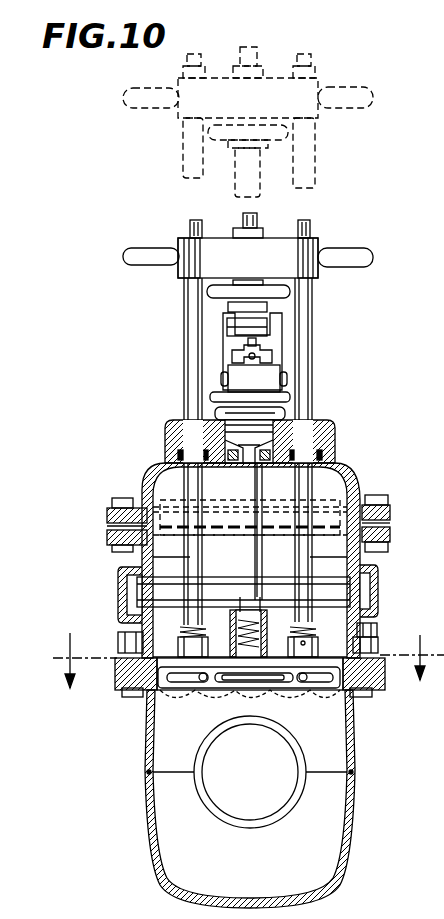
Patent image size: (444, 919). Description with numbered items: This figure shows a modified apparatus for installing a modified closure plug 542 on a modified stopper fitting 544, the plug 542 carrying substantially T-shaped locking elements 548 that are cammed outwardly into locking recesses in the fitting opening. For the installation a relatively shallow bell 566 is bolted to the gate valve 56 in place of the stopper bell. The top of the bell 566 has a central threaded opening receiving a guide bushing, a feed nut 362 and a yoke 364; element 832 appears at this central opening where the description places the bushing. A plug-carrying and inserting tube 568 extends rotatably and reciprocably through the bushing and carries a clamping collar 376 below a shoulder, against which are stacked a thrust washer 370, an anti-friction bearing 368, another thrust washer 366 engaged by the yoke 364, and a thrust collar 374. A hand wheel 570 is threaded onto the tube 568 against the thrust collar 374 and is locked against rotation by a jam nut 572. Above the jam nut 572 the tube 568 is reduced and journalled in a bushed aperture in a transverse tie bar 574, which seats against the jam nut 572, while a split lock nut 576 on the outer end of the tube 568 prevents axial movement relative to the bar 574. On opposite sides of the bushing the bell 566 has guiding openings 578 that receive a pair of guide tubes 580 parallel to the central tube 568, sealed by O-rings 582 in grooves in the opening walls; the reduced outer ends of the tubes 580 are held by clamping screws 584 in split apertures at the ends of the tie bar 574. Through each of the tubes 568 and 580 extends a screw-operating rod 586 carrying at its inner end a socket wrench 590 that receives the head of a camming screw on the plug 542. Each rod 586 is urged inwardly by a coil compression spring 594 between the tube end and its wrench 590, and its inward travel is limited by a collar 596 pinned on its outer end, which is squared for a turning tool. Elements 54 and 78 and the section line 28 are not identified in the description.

The transverse tie bar 574 is at (263, 269).
The clamping screws 584 is at (180, 244).
The collar 596 is at (188, 235).
The split lock nut 576 is at (258, 228).
The guide tubes 580 is at (185, 385).
The jam nut 572 is at (265, 283).
The hand wheel 570 is at (290, 296).
The thrust collar 374 is at (228, 307).
The thrust washer 366 is at (227, 326).
The anti-friction bearing 368 is at (224, 330).
The thrust washer 370 is at (232, 355).
The clamping collar 376 is at (268, 362).
The yoke 364 is at (283, 360).
The feed nut 362 is at (257, 380).
The packing ring 832 is at (285, 414).
The plug-carrying and inserting tube 568 is at (265, 348).
The guiding openings 578 is at (200, 440).
The O-rings 582 is at (178, 455).
The bell 566 is at (355, 480).
The coil compression spring 594 is at (140, 625).
The gate valve 56 is at (378, 575).
The nut 54 is at (372, 628).
The socket wrench 590 is at (120, 642).
The screw-operating rod 586 is at (185, 625).
The closure plug 542 is at (265, 692).
The locking elements 548 is at (180, 684).
The stopper fitting 544 is at (145, 843).
The port 78 is at (283, 810).
The section line 28 is at (243, 660).